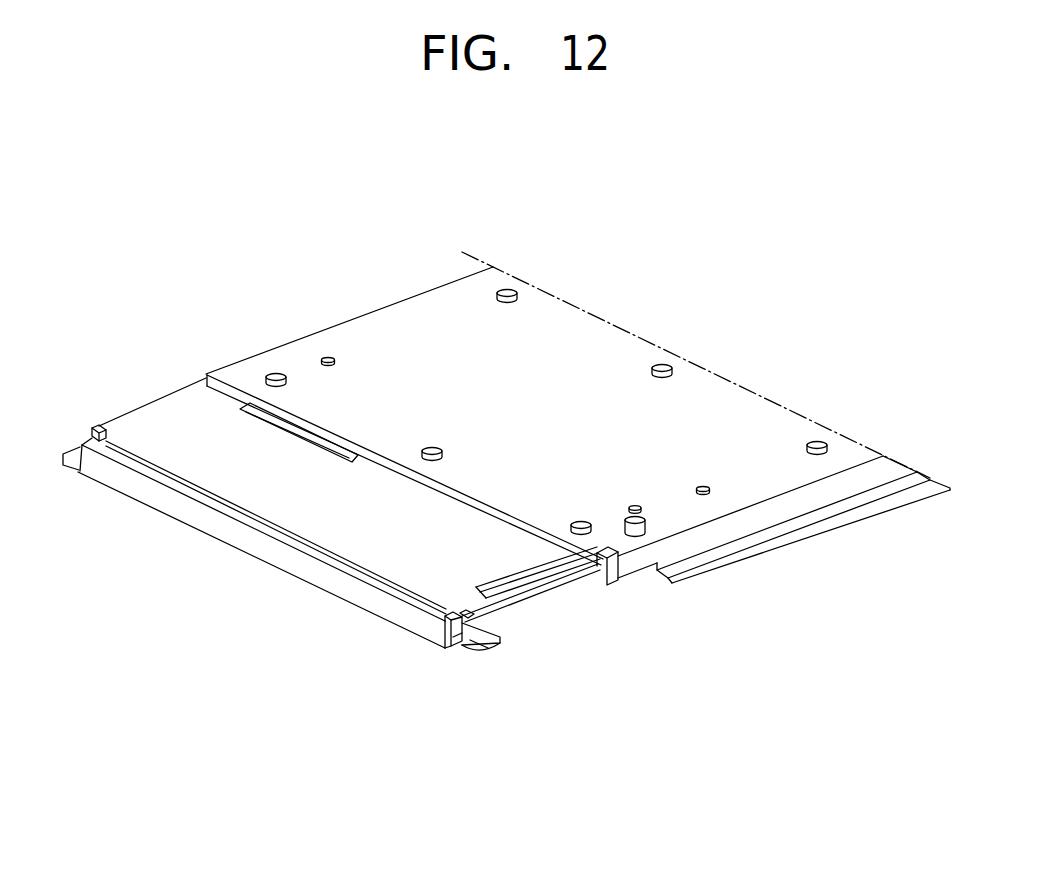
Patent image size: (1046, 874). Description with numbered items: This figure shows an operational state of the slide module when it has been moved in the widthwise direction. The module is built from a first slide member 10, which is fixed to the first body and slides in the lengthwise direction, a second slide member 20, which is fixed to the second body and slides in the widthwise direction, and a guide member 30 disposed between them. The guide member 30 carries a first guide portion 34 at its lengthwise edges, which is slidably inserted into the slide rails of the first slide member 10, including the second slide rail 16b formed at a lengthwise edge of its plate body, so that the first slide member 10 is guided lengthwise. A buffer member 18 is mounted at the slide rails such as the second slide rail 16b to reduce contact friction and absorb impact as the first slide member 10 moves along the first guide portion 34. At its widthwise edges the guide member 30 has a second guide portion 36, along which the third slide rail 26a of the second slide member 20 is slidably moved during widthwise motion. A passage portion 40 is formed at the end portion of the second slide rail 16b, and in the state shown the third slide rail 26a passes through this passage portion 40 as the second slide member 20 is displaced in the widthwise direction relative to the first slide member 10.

The first slide member 10 is at (492, 647).
The second slide rail 16b is at (260, 547).
The buffer member 18 is at (457, 647).
The second slide member 20 is at (764, 478).
The third slide rail 26a is at (710, 535).
The guide member 30 is at (128, 435).
The first guide portion 34 is at (472, 624).
The second guide portion 36 is at (173, 393).
The passage portion 40 is at (87, 440).